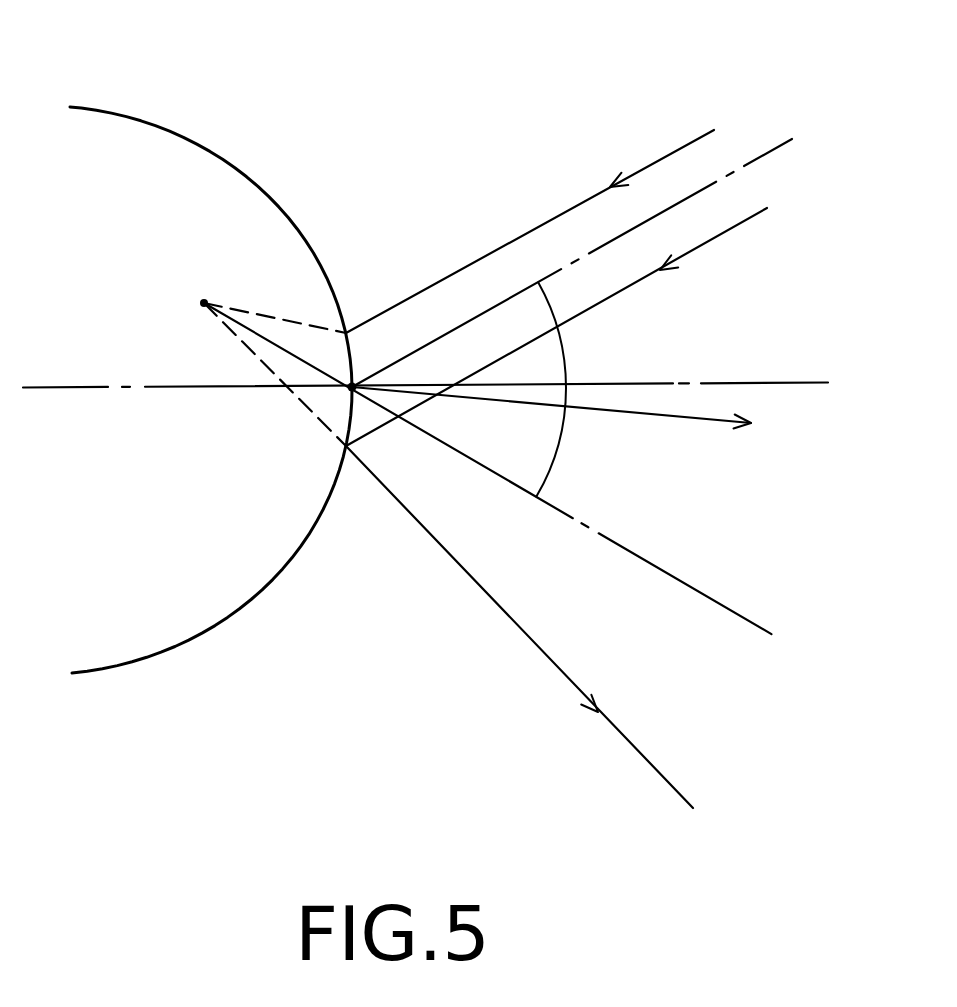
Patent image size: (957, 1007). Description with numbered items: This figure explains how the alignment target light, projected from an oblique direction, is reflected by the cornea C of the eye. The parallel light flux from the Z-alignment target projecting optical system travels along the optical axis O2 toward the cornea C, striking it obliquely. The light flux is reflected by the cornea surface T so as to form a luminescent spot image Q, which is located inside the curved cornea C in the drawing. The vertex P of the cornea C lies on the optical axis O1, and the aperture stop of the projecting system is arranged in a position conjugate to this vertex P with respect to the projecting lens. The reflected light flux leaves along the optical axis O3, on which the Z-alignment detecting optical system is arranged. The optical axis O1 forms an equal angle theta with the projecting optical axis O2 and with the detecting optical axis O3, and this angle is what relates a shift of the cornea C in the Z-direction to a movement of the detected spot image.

The cornea C is at (213, 340).
The cornea surface T is at (277, 207).
The luminescent spot image Q is at (204, 303).
The vertex of the cornea P is at (337, 406).
The optical axis O1 is at (768, 383).
The optical axis O2 is at (767, 150).
The optical axis O3 is at (730, 608).